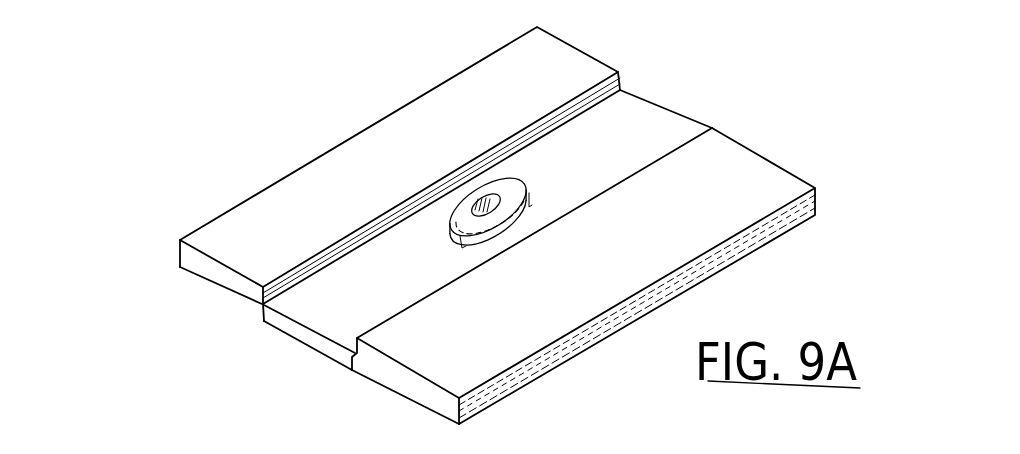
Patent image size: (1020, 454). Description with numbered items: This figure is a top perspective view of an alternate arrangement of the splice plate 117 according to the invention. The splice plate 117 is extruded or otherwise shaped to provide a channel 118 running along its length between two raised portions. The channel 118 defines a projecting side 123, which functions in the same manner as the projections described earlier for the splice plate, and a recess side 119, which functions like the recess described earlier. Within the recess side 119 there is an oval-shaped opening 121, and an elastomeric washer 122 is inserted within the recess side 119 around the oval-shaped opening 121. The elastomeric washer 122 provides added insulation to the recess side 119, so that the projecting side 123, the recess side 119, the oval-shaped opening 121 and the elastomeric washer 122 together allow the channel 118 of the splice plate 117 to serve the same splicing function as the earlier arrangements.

The splice plate 117 is at (93, 211).
The channel 118 is at (404, 286).
The recess side 119 is at (331, 337).
The oval-shaped opening 121 is at (590, 128).
The elastomeric washer 122 is at (524, 189).
The projecting side 123 is at (287, 337).